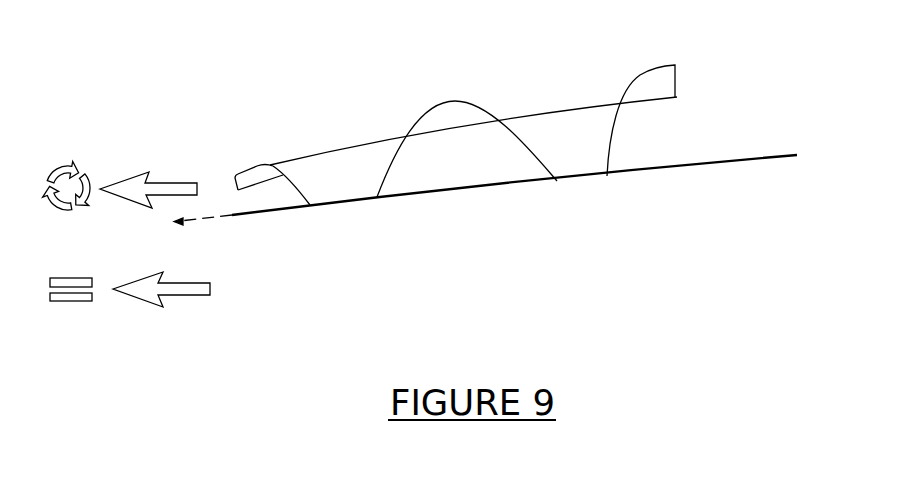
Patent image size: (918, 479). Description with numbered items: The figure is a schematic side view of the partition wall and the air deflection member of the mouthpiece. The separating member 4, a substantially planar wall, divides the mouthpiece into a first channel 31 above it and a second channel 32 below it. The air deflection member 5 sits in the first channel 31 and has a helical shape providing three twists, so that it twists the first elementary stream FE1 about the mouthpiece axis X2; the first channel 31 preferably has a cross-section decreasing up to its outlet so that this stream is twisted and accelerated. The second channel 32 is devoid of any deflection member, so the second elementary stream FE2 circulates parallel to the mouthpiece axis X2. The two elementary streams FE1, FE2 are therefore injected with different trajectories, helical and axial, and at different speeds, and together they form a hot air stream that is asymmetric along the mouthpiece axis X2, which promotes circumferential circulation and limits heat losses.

The separating member 4 is at (497, 182).
The air deflection member 5 is at (437, 106).
The first channel 31 is at (675, 150).
The second channel 32 is at (675, 214).
The mouthpiece axis X2 is at (184, 228).
The first elementary stream FE1 is at (120, 182).
The second elementary stream FE2 is at (130, 281).